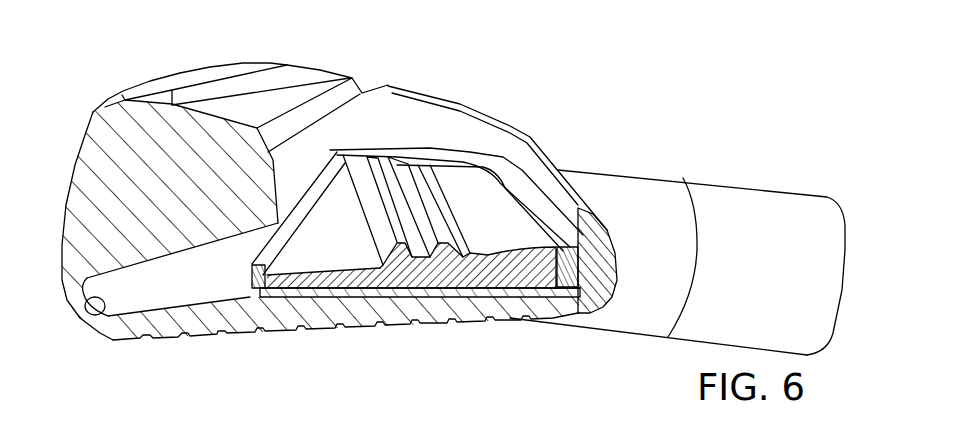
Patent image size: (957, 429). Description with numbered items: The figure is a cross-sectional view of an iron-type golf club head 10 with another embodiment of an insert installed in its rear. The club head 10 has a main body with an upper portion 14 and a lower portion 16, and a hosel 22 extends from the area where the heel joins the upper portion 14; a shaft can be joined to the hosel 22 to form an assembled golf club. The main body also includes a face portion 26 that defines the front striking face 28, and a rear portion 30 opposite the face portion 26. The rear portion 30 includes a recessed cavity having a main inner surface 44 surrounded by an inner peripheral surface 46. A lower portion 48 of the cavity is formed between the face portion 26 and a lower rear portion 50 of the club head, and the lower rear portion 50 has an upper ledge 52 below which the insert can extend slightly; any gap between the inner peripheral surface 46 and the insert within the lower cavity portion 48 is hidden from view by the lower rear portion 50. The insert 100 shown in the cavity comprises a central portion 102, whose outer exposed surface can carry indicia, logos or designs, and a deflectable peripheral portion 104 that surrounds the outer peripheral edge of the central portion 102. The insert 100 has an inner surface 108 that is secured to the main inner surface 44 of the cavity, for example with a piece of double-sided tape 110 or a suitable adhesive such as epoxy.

The golf club head 10 is at (499, 80).
The upper portion 14 is at (613, 283).
The lower portion 16 is at (58, 273).
The hosel 22 is at (641, 173).
The face portion 26 is at (587, 310).
The front striking face 28 is at (470, 325).
The rear portion 30 is at (297, 90).
The main inner surface 44 is at (182, 303).
The inner peripheral surface 46 is at (103, 314).
The lower portion of the cavity 48 is at (152, 282).
The lower rear portion 50 is at (210, 77).
The upper ledge 52 is at (330, 118).
The insert 100 is at (502, 215).
The central portion 102 is at (507, 273).
The deflectable peripheral portion 104 is at (253, 277).
The inner surface 108 is at (313, 282).
The double-sided tape 110 is at (367, 293).